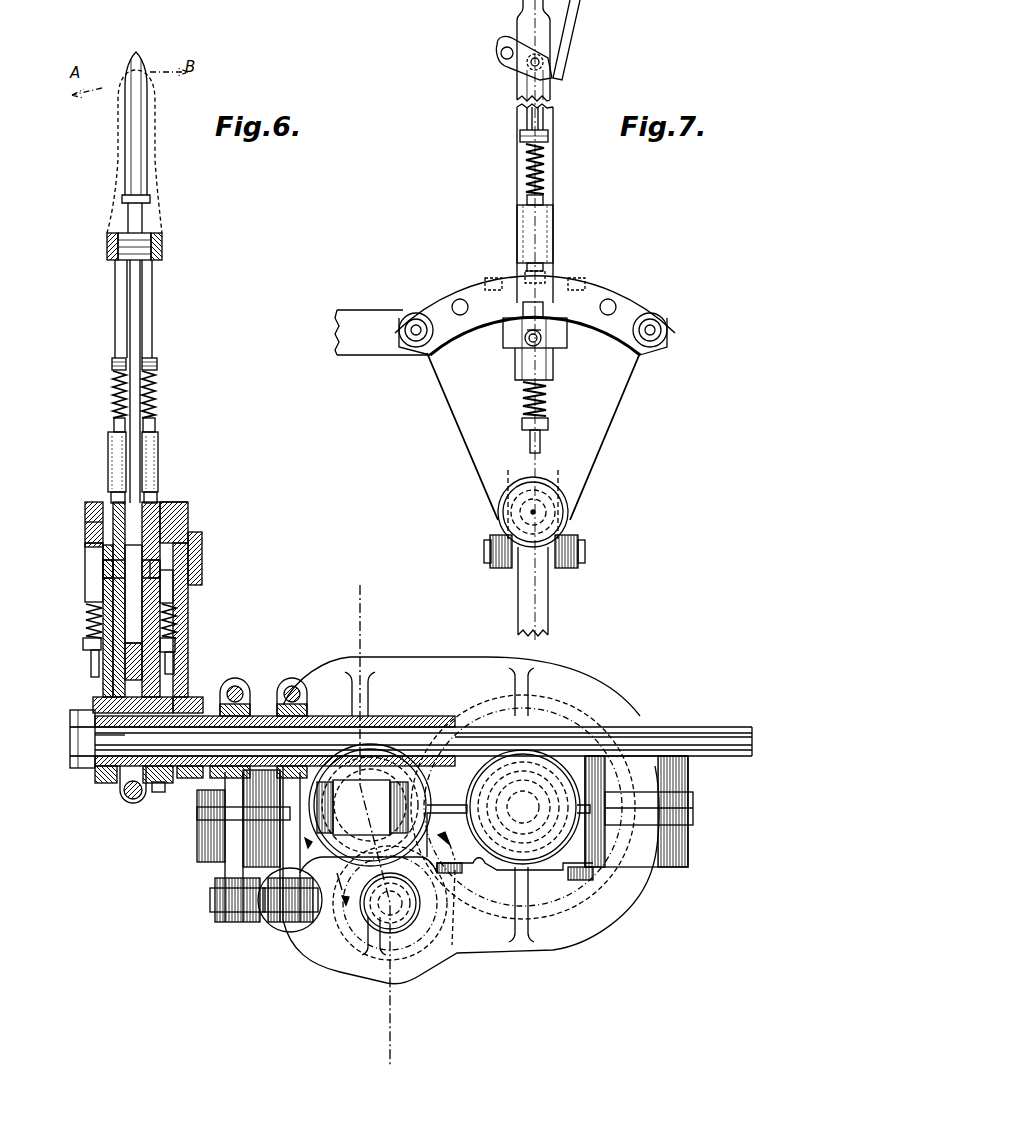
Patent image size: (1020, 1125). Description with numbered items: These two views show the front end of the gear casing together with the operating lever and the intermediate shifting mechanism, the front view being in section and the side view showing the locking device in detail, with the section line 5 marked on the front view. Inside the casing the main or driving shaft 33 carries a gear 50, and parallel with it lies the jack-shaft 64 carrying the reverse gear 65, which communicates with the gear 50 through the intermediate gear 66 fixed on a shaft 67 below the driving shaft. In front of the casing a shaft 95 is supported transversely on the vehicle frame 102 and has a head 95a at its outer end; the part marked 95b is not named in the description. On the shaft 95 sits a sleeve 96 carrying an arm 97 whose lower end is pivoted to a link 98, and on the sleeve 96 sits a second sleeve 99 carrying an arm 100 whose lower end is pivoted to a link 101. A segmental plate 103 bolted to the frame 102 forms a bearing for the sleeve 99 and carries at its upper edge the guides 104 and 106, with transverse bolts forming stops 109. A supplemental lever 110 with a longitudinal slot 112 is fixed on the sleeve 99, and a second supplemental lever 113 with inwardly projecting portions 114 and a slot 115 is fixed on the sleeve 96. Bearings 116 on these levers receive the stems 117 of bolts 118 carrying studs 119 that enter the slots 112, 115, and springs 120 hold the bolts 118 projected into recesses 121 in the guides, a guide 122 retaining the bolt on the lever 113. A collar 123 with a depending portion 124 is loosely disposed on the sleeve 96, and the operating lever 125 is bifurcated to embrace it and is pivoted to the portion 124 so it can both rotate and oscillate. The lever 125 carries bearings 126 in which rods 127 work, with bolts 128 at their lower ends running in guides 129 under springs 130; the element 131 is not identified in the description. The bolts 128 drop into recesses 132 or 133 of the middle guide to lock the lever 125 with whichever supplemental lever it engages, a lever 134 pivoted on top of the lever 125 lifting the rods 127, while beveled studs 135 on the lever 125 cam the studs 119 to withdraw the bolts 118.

In FIG. 6, the section line 5 is at (372, 826).
In FIG. 6, the main or driving shaft 33 is at (370, 805).
In FIG. 6, the gear 50 is at (420, 775).
In FIG. 6, the jack-shaft 64 is at (523, 807).
In FIG. 6, the reverse gear 65 is at (518, 700).
In FIG. 6, the intermediate gear 66 is at (448, 920).
In FIG. 6, the shaft 67 is at (400, 903).
In FIG. 6, the shaft 95 is at (674, 742).
In FIG. 6, the head 95a is at (70, 736).
In FIG. 7, the shaft hub 95b is at (500, 512).
In FIG. 6, the sleeve 96 is at (370, 722).
In FIG. 6, the arm 97 is at (292, 843).
In FIG. 6, the link 98 is at (285, 922).
In FIG. 6, the second sleeve 99 is at (262, 716).
In FIG. 6, the arm 100 is at (225, 840).
In FIG. 6, the link 101 is at (220, 922).
In FIG. 6, the vehicle frame 102 is at (202, 556).
In FIG. 7, the vehicle frame 102 is at (400, 312).
In FIG. 6, the segmental plate 103 is at (188, 504).
In FIG. 6, the guide 104 is at (90, 502).
In FIG. 7, the guide 104 is at (632, 302).
In FIG. 6, the guide 106 is at (172, 502).
In FIG. 7, the stops 109 is at (460, 299).
In FIG. 6, the supplemental lever 110 is at (165, 700).
In FIG. 6, the longitudinal slot 112 is at (165, 580).
In FIG. 6, the second supplemental lever 113 is at (98, 705).
In FIG. 6, the inwardly projecting portions 114 is at (103, 522).
In FIG. 6, the longitudinal slot 115 is at (103, 575).
In FIG. 6, the bearings 116 is at (83, 646).
In FIG. 7, the bearings 116 is at (522, 425).
In FIG. 6, the stems 117 is at (91, 672).
In FIG. 7, the stems 117 is at (530, 445).
In FIG. 6, the bolts 118 is at (85, 554).
In FIG. 6, the studs 119 is at (202, 534).
In FIG. 7, the studs 119 is at (527, 346).
In FIG. 6, the springs 120 is at (86, 622).
In FIG. 7, the springs 120 is at (523, 404).
In FIG. 6, the recesses 121 is at (85, 522).
In FIG. 7, the recesses 121 is at (522, 322).
In FIG. 6, the guide 122 is at (85, 543).
In FIG. 7, the guide 122 is at (553, 362).
In FIG. 6, the collar 123 is at (97, 738).
In FIG. 6, the depending portion 124 is at (118, 792).
In FIG. 7, the depending portion 124 is at (552, 568).
In FIG. 7, the operating lever 125 is at (555, 190).
In FIG. 6, the bearings or guides 126 is at (112, 359).
In FIG. 7, the bearings or guides 126 is at (520, 136).
In FIG. 6, the rods 127 is at (115, 287).
In FIG. 7, the rods 127 is at (545, 112).
In FIG. 6, the bolts 128 is at (114, 426).
In FIG. 7, the bolts 128 is at (545, 267).
In FIG. 6, the guides 129 is at (108, 440).
In FIG. 7, the guides 129 is at (540, 225).
In FIG. 6, the springs 130 is at (112, 380).
In FIG. 7, the springs 130 is at (526, 174).
In FIG. 6, the collar 131 is at (112, 492).
In FIG. 7, the recess 132 is at (490, 278).
In FIG. 7, the recess 133 is at (576, 278).
In FIG. 6, the lever 134 is at (146, 116).
In FIG. 7, the lever 134 is at (580, 26).
In FIG. 6, the studs 135 is at (127, 635).
In FIG. 7, the studs 135 is at (542, 336).